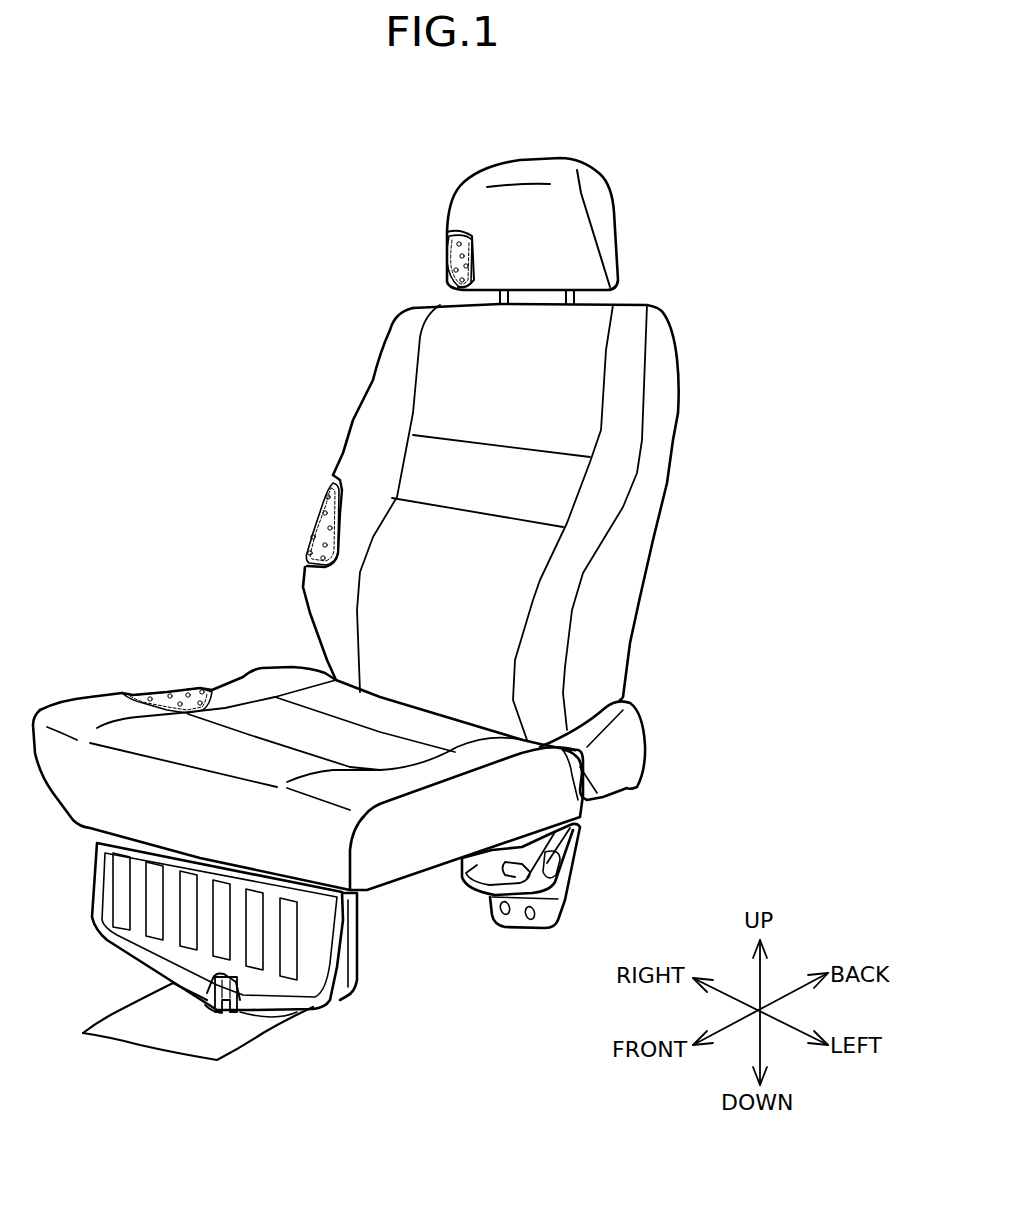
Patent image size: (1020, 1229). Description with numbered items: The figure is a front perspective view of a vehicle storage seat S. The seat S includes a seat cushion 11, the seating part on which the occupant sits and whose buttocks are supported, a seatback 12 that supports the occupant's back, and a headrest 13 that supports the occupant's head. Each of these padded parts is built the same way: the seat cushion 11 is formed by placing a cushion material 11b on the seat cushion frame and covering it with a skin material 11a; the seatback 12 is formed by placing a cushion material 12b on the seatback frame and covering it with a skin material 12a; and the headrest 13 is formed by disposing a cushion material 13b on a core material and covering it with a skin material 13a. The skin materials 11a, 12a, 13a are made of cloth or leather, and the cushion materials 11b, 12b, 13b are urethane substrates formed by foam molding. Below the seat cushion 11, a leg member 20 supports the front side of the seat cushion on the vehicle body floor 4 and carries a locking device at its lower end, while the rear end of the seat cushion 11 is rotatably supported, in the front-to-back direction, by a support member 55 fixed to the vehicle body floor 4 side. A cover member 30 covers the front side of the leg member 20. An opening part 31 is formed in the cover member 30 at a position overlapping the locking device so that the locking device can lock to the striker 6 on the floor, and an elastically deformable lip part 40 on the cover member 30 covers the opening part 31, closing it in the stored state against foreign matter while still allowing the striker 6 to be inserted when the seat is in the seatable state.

The vehicle storage seat S is at (655, 188).
The headrest 13 is at (600, 218).
The skin material 13a is at (450, 234).
The cushion material 13b is at (450, 258).
The seatback 12 is at (636, 556).
The skin material 12a is at (328, 496).
The cushion material 12b is at (320, 526).
The seat cushion 11 is at (242, 688).
The skin material 11a is at (126, 690).
The cushion material 11b is at (180, 690).
The leg member 20 is at (347, 943).
The cover member 30 is at (318, 1003).
The opening part 31 is at (213, 973).
The lip part 40 is at (228, 1012).
The striker 6 is at (210, 1002).
The vehicle body floor 4 is at (170, 1030).
The support member 55 is at (565, 900).